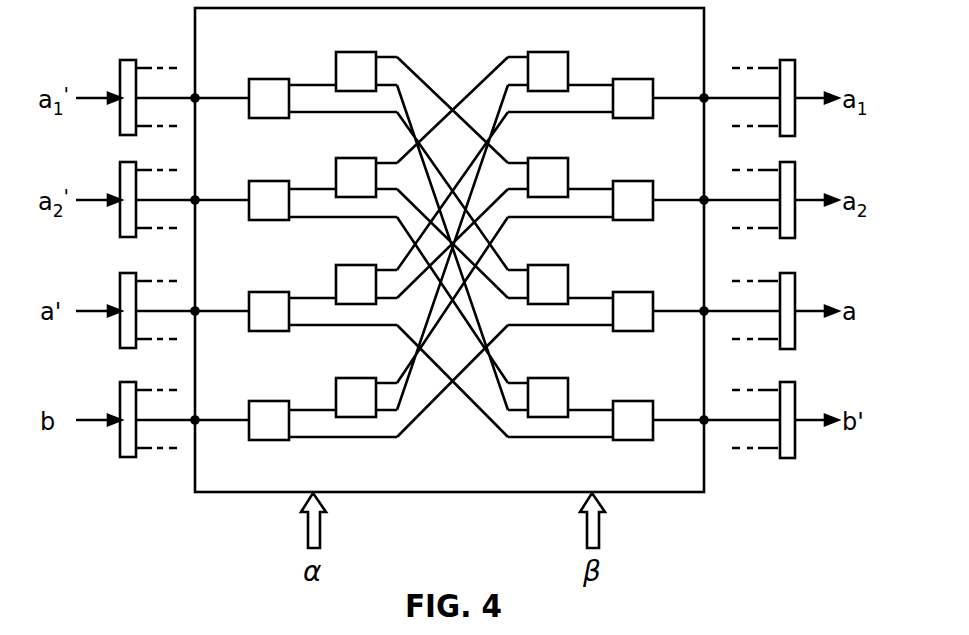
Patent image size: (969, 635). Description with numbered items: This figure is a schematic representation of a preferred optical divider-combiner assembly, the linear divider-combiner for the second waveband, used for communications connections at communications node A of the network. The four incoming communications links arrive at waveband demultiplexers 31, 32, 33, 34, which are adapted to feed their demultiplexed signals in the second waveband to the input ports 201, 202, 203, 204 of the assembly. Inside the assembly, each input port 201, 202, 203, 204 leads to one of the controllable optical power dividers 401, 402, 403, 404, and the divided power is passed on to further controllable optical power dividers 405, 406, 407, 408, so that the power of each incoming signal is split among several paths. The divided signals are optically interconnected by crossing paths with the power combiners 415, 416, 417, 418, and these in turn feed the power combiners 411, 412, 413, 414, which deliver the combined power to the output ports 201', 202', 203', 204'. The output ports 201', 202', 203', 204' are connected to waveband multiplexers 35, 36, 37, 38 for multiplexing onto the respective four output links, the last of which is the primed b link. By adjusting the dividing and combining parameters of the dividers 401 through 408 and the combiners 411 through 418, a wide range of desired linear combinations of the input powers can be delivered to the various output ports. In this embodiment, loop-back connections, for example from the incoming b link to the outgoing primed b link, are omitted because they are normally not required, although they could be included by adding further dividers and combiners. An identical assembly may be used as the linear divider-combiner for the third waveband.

The waveband demultiplexer 31 is at (118, 72).
The waveband demultiplexer 32 is at (118, 177).
The waveband demultiplexer 33 is at (118, 287).
The waveband demultiplexer 34 is at (118, 397).
The waveband multiplexer 35 is at (797, 72).
The waveband multiplexer 36 is at (797, 177).
The waveband multiplexer 37 is at (797, 287).
The waveband multiplexer 38 is at (797, 397).
The input port 201 is at (192, 78).
The input port 202 is at (192, 178).
The input port 203 is at (192, 289).
The input port 204 is at (192, 397).
The output port 201' is at (716, 78).
The output port 202' is at (716, 180).
The output port 203' is at (716, 290).
The output port 204' is at (716, 398).
The controllable optical power divider 401 is at (268, 78).
The controllable optical power divider 402 is at (267, 181).
The controllable optical power divider 403 is at (267, 291).
The controllable optical power divider 404 is at (267, 400).
The controllable optical power divider 405 is at (360, 50).
The controllable optical power divider 406 is at (360, 157).
The controllable optical power divider 407 is at (360, 264).
The controllable optical power divider 408 is at (362, 377).
The power combiner 411 is at (632, 78).
The power combiner 412 is at (632, 180).
The power combiner 413 is at (632, 291).
The power combiner 414 is at (632, 400).
The power combiner 415 is at (545, 50).
The power combiner 416 is at (545, 157).
The power combiner 417 is at (545, 264).
The power combiner 418 is at (545, 377).